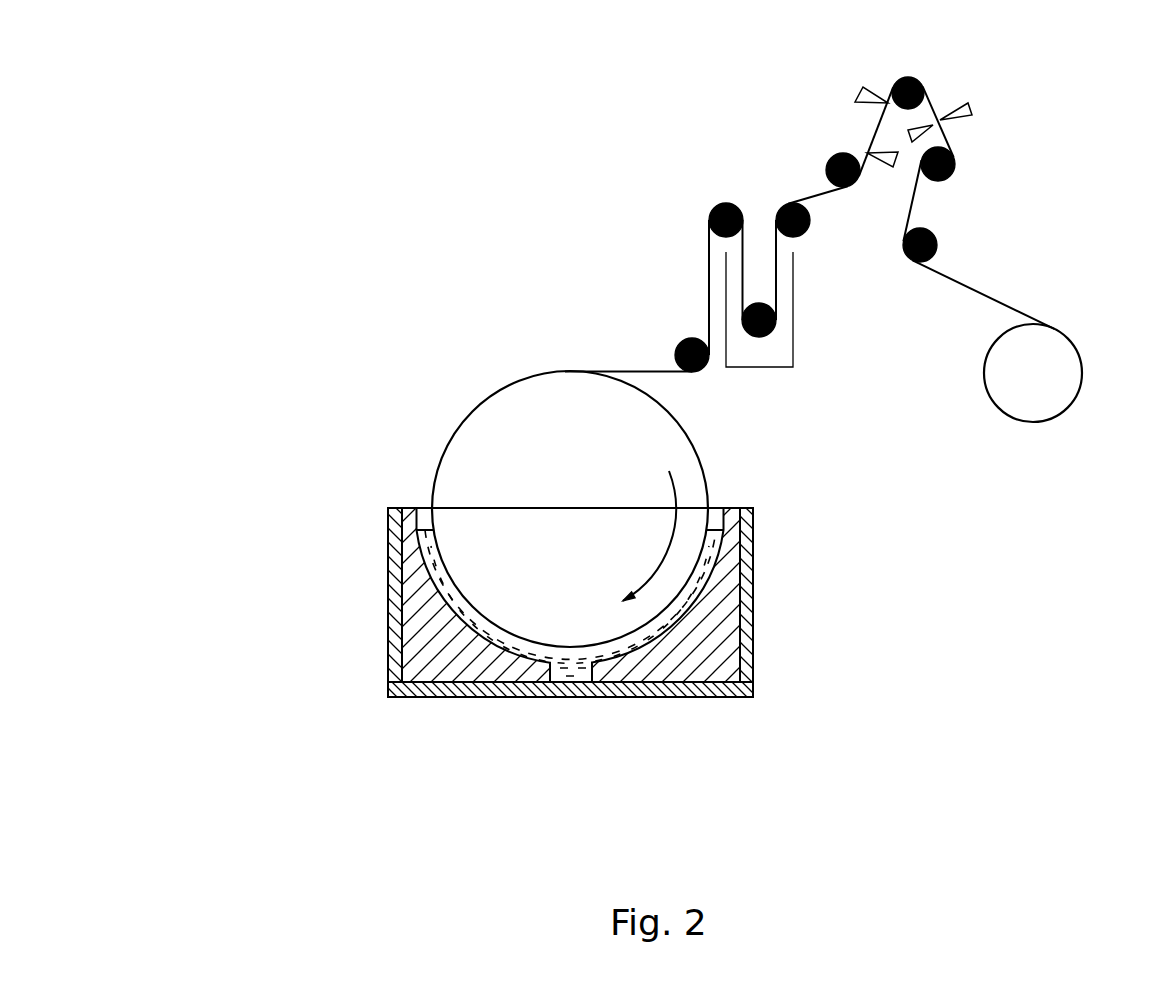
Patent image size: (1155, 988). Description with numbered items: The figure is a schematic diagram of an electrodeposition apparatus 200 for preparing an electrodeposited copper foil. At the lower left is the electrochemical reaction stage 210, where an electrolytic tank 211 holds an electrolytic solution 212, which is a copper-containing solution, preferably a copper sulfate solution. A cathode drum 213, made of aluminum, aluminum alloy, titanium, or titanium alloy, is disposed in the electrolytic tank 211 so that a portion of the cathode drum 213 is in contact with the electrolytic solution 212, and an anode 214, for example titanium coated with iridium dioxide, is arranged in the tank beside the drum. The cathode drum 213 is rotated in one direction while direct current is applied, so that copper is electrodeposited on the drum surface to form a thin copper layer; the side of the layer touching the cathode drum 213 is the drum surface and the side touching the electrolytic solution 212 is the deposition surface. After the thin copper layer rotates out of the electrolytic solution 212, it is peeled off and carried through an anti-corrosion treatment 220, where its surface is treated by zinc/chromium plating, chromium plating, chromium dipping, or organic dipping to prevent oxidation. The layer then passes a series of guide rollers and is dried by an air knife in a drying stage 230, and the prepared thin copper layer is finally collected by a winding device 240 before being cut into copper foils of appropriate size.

The electrodeposition apparatus 200 is at (100, 97).
The electrochemical reaction stage 210 is at (312, 306).
The electrolytic tank 211 is at (387, 543).
The electrolytic solution 212 is at (447, 597).
The cathode drum 213 is at (483, 448).
The anode 214 is at (728, 523).
The anti-corrosion treatment 220 is at (686, 250).
The drying stage 230 is at (818, 100).
The winding device 240 is at (1062, 278).